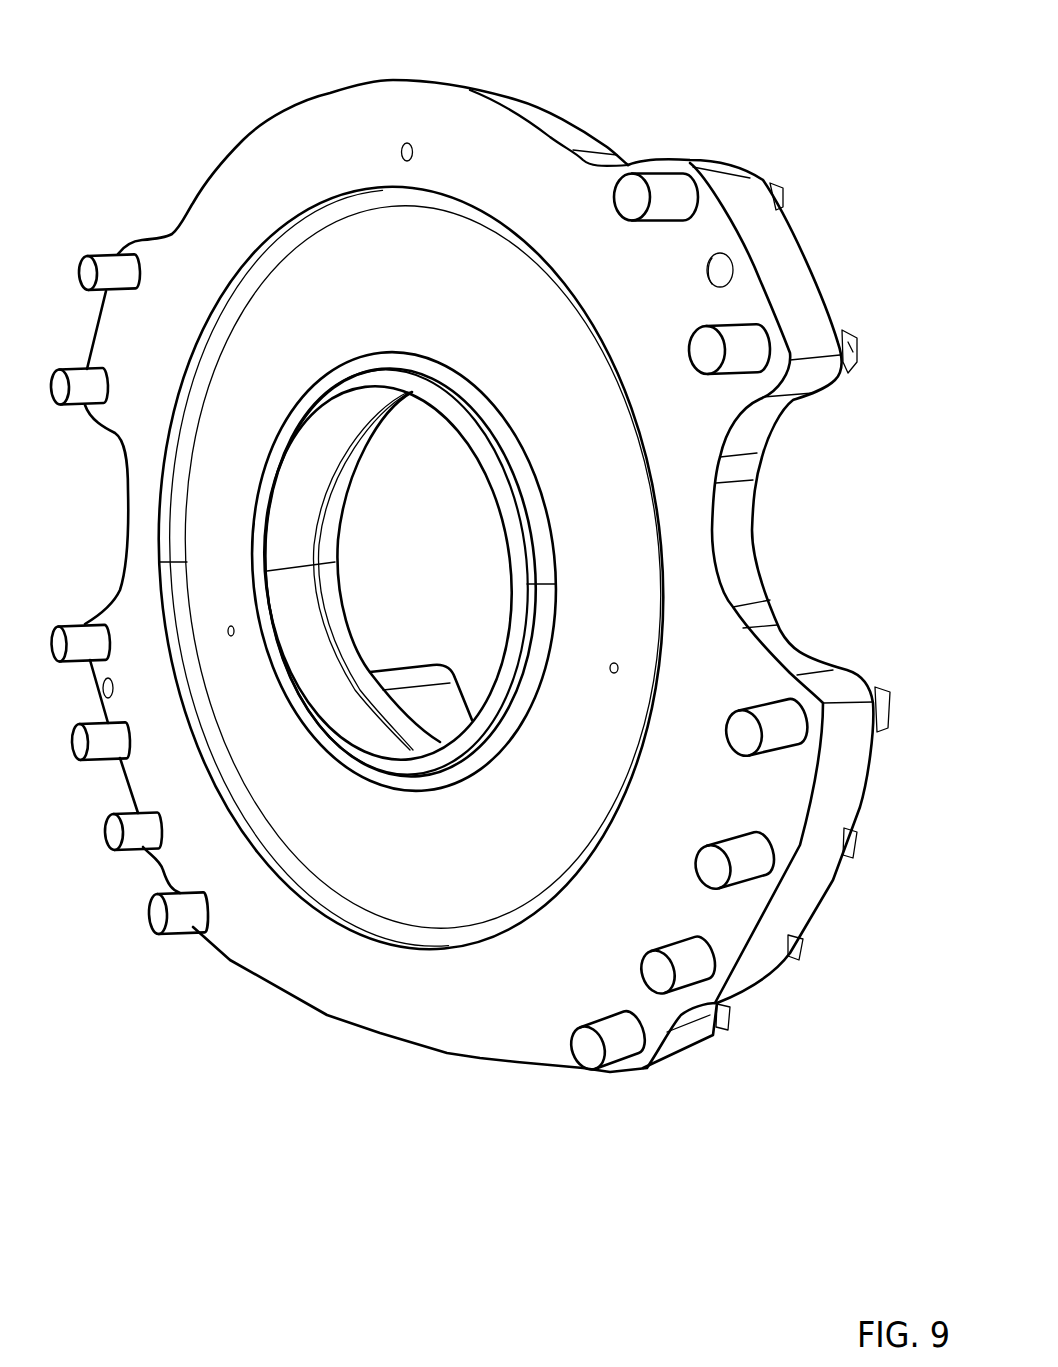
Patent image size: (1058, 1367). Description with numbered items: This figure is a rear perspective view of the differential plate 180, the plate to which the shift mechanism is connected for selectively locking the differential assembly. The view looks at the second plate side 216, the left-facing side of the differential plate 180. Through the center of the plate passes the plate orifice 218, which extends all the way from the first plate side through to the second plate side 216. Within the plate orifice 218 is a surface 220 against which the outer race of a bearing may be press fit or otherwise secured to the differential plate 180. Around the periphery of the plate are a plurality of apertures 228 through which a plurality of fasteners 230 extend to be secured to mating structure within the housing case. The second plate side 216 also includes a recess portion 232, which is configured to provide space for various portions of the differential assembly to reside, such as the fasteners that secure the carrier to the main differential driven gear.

The differential plate 180 is at (150, 126).
The second plate side 216 is at (348, 151).
The plate orifice 218 is at (297, 488).
The surface 220 is at (315, 653).
The apertures 228 is at (740, 338).
The fasteners 230 is at (850, 353).
The recess portion 232 is at (452, 852).